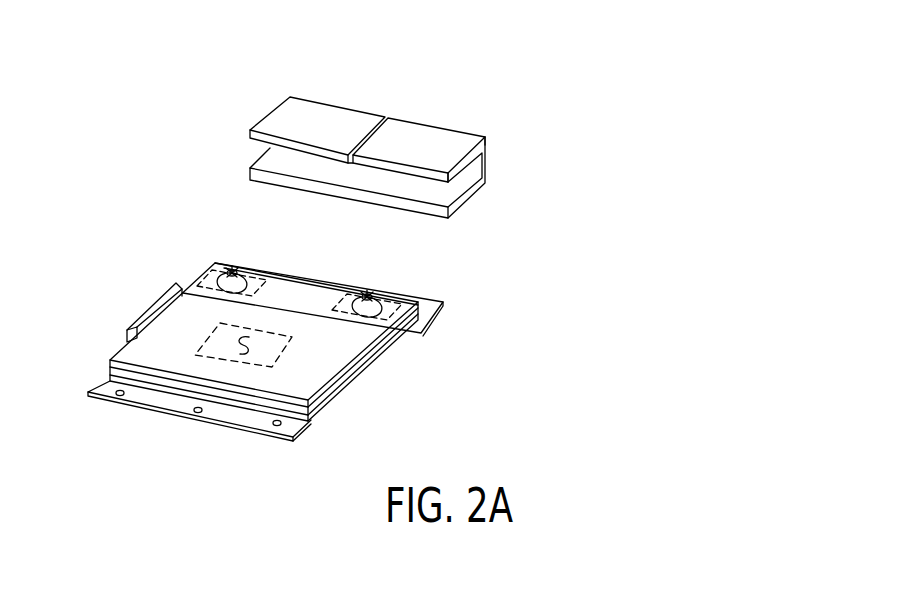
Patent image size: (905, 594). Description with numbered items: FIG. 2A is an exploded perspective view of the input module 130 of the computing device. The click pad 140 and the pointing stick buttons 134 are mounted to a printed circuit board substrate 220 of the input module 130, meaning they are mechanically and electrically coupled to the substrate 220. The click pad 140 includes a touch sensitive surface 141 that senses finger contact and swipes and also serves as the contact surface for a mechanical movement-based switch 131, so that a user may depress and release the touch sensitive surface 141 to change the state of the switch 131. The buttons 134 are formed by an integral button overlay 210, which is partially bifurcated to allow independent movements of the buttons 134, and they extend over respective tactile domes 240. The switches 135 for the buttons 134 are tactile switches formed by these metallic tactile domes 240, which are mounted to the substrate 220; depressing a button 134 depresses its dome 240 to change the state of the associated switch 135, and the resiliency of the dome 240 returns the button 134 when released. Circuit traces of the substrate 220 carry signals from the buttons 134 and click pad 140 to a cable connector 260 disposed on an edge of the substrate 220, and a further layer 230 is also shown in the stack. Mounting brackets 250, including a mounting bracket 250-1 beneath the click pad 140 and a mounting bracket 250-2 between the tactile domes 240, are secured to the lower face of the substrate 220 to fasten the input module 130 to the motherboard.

The input module 130 is at (130, 247).
The switch 131 is at (282, 352).
The pointing stick buttons 134 is at (349, 106).
The switches 135 is at (243, 270).
The click pad 140 is at (221, 368).
The touch sensitive surface 141 is at (113, 398).
The integral button overlay 210 is at (458, 131).
The printed circuit board substrate 220 is at (368, 363).
The middle layer 230 is at (398, 330).
The tactile domes 240 is at (228, 270).
The mounting brackets 250 is at (436, 310).
The mounting bracket 250-1 is at (178, 418).
The mounting bracket 250-2 is at (440, 300).
The cable connector 260 is at (160, 292).